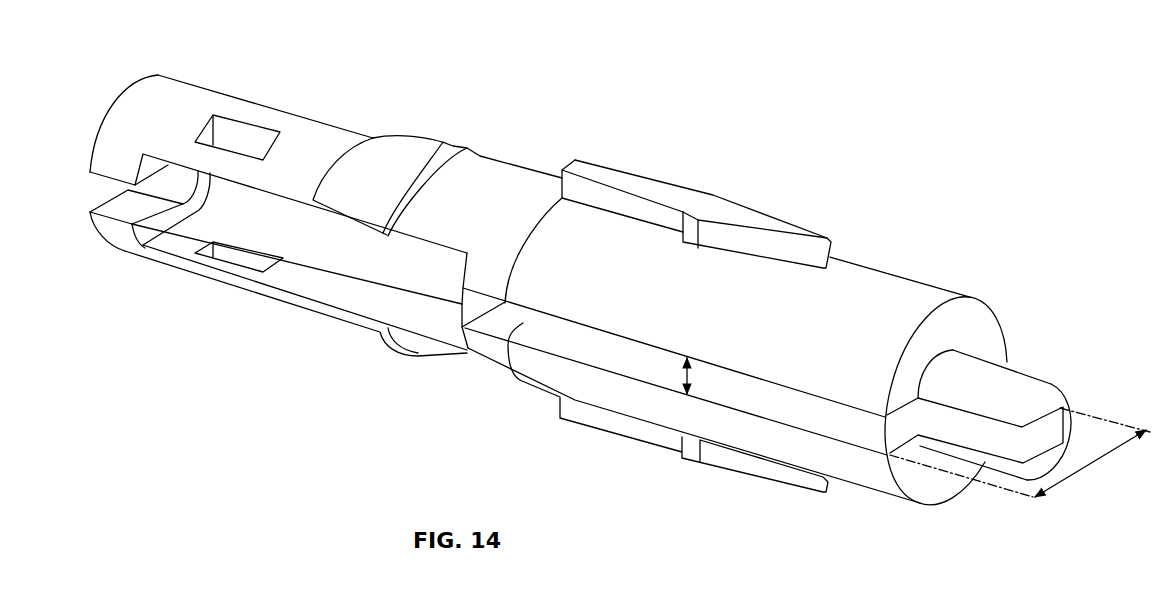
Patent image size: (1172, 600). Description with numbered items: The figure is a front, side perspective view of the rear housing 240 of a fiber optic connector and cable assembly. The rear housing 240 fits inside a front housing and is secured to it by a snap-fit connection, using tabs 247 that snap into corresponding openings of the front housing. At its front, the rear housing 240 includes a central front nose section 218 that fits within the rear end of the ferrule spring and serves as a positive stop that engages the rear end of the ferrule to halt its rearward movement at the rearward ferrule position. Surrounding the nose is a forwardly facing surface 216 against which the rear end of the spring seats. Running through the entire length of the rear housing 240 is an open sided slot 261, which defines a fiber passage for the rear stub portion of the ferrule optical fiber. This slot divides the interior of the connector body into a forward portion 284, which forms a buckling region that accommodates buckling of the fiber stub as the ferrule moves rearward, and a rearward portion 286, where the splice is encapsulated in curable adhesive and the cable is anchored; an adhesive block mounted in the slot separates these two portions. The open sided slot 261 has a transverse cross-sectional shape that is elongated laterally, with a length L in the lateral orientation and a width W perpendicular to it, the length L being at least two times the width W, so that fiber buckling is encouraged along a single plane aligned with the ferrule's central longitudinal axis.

The rear housing 240 is at (518, 165).
The tabs 247 is at (745, 215).
The forwardly facing surface 216 is at (975, 320).
The central front nose section 218 is at (1025, 383).
The rearward portion 286 is at (287, 233).
The open sided slot 261 is at (507, 345).
The forward portion 284 is at (613, 360).
The width W is at (675, 378).
The length L is at (1100, 457).